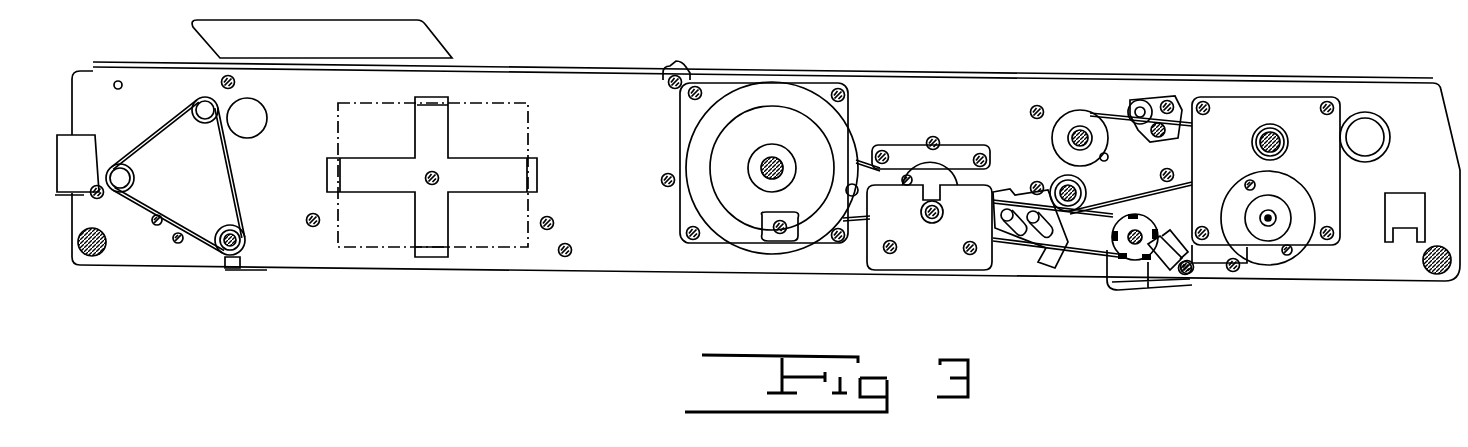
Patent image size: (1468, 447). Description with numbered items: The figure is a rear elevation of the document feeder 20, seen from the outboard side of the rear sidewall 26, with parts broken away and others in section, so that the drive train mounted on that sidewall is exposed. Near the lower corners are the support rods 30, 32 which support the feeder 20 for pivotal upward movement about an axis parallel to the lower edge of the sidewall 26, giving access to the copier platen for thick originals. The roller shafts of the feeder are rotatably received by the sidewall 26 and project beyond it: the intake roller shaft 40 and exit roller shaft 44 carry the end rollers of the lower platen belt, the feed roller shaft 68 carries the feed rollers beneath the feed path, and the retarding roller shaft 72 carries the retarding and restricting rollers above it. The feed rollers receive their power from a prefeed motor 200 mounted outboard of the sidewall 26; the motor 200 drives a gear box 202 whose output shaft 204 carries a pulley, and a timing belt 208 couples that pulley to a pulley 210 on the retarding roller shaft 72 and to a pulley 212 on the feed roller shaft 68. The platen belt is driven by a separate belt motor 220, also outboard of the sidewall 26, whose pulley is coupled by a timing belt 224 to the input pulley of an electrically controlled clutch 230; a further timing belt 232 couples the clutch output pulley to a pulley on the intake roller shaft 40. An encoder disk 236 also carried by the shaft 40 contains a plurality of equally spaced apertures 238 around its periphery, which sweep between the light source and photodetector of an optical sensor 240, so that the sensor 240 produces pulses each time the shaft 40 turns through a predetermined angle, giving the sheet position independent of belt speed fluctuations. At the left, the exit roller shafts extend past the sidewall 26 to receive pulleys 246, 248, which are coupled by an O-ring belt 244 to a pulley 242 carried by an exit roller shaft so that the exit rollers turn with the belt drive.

The document feeder 20 is at (993, 65).
The rear sidewall 26 is at (918, 93).
The support rod 30 is at (1437, 276).
The support rod 32 is at (92, 258).
The intake roller shaft 40 is at (1144, 217).
The exit roller shaft 44 is at (246, 242).
The feed roller shaft 68 is at (1087, 186).
The retarding roller shaft 72 is at (1072, 137).
The prefeed motor 200 is at (1272, 266).
The gear box 202 is at (1240, 108).
The output shaft 204 is at (1275, 125).
The timing belt 208 is at (1115, 117).
The pulley 210 is at (1067, 113).
The pulley 212 is at (1100, 217).
The belt motor 220 is at (775, 90).
The timing belt 224 is at (857, 222).
The electrically controlled clutch 230 is at (947, 177).
The timing belt 232 is at (1023, 254).
The encoder disk 236 is at (1117, 250).
The apertures 238 is at (1138, 219).
The optical sensor 240 is at (1141, 262).
The pulley 242 is at (247, 266).
The O-ring belt 244 is at (247, 198).
The pulley 246 is at (142, 175).
The pulley 248 is at (197, 101).